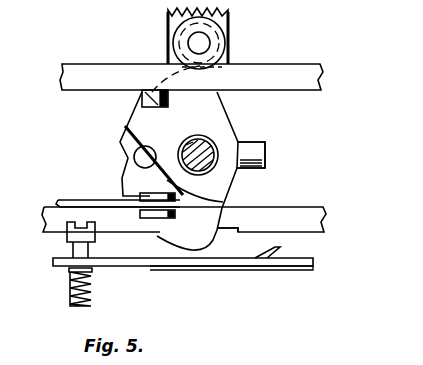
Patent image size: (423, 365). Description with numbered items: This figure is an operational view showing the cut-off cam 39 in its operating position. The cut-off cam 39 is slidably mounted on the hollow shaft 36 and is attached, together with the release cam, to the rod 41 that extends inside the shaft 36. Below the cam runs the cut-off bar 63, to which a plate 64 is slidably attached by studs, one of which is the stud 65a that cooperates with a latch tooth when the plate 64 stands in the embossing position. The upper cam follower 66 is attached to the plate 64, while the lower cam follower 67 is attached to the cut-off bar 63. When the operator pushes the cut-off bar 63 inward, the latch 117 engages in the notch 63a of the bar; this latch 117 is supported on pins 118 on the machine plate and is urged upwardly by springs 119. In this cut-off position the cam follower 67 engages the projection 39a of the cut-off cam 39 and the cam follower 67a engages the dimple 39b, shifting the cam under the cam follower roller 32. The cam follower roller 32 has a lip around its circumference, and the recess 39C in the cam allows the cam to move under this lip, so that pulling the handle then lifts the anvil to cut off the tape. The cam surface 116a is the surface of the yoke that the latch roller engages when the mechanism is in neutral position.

The cam follower roller 32 is at (232, 34).
The shaft 36 is at (199, 175).
The cut-off cam 39 is at (223, 102).
The projection 39a is at (266, 156).
The dimple 39b is at (125, 126).
The recess 39C is at (134, 157).
The rod 41 is at (218, 149).
The cut-off bar 63 is at (292, 207).
The notch 63a is at (219, 229).
The plate 64 is at (58, 200).
The stud 65a is at (16, 242).
The upper cam follower 66 is at (122, 197).
The lower cam follower 67 is at (153, 214).
The cam follower 67a is at (150, 93).
The cam surface 116a is at (21, 127).
The latch 117 is at (178, 268).
The pins 118 is at (80, 310).
The springs 119 is at (70, 292).